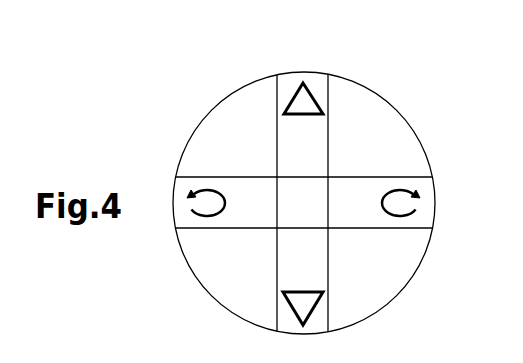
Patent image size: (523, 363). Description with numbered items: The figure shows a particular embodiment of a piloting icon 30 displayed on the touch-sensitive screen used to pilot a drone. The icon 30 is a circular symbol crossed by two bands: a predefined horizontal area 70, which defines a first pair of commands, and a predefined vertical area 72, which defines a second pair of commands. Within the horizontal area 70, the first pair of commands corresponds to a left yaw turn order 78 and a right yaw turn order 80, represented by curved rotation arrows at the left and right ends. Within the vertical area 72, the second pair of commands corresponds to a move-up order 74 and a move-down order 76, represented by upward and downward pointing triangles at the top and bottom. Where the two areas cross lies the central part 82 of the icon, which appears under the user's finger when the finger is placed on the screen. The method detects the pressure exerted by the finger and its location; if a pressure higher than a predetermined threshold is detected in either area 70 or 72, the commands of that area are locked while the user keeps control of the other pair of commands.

The icon 30 is at (216, 102).
The predefined horizontal area 70 is at (435, 188).
The predefined vertical area 72 is at (313, 70).
The move-up order 74 is at (297, 85).
The move-down order 76 is at (315, 312).
The left yaw turn order 78 is at (205, 216).
The right yaw turn order 80 is at (400, 218).
The central part 82 is at (313, 192).